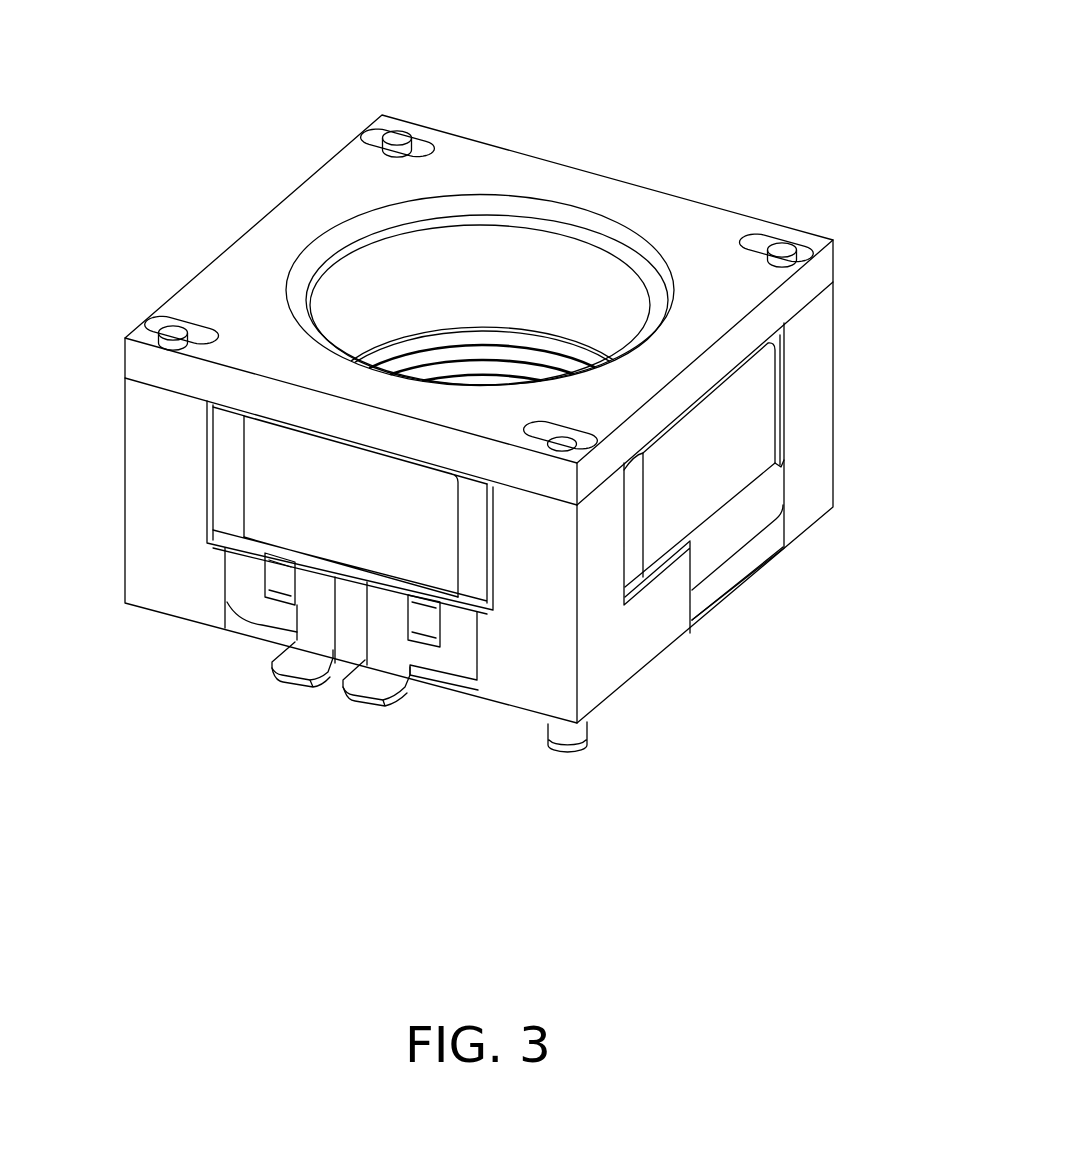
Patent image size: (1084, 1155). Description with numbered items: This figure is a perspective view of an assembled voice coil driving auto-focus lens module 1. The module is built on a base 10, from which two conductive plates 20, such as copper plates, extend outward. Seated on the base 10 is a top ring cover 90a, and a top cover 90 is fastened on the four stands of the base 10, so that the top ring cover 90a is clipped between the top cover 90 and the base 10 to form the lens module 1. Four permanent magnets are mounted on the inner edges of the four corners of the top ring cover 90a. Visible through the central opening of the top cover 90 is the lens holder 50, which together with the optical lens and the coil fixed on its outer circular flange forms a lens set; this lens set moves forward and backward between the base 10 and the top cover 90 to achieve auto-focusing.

The voice coil driving auto-focus lens module 1 is at (708, 97).
The base 10 is at (623, 638).
The conductive plates 20 is at (377, 688).
The lens holder 50 is at (387, 270).
The top cover 90 is at (695, 223).
The top ring cover 90a is at (733, 420).